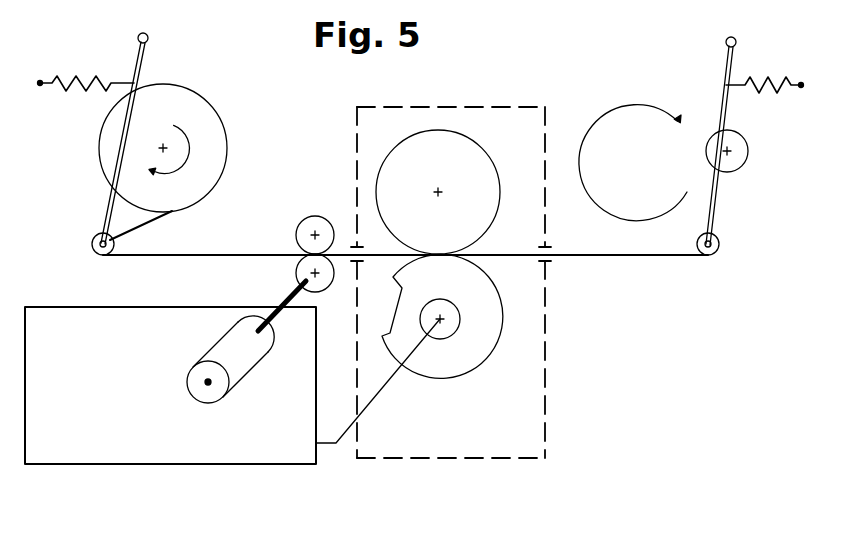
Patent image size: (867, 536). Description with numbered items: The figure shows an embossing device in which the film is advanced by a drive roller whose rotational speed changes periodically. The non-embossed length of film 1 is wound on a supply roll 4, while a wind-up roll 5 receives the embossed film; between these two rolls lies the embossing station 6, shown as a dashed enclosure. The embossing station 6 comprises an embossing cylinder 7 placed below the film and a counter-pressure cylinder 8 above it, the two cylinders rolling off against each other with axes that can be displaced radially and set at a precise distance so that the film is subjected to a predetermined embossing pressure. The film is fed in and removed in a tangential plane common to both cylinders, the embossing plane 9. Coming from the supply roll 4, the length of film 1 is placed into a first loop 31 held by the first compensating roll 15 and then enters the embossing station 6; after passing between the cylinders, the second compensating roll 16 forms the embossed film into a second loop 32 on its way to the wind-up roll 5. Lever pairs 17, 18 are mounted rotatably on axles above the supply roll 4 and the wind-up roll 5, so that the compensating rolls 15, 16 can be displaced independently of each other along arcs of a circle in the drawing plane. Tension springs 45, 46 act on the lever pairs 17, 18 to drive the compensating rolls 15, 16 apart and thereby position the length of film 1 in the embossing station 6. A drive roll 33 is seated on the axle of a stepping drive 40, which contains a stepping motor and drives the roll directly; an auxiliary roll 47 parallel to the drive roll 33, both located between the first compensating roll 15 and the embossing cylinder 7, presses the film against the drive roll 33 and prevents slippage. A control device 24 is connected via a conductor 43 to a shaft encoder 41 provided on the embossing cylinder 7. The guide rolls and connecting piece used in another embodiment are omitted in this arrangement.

The length of film 1 is at (206, 253).
The supply roll 4 is at (203, 118).
The wind-up roll 5 is at (749, 142).
The embossing station 6 is at (545, 113).
The embossing cylinder 7 is at (483, 330).
The counter-pressure cylinder 8 is at (434, 127).
The embossing plane 9 is at (520, 257).
The first compensating roll 15 is at (94, 244).
The second compensating roll 16 is at (698, 241).
The lever pair 17 is at (106, 196).
The lever pair 18 is at (720, 108).
The control device 24 is at (67, 452).
The first loop 31 is at (112, 259).
The second loop 32 is at (700, 257).
The drive roll 33 is at (296, 272).
The stepping drive 40 is at (254, 350).
The shaft encoder 41 is at (448, 328).
The conductor 43 is at (337, 447).
The tension spring 45 is at (81, 70).
The tension spring 46 is at (768, 76).
The auxiliary roll 47 is at (312, 217).